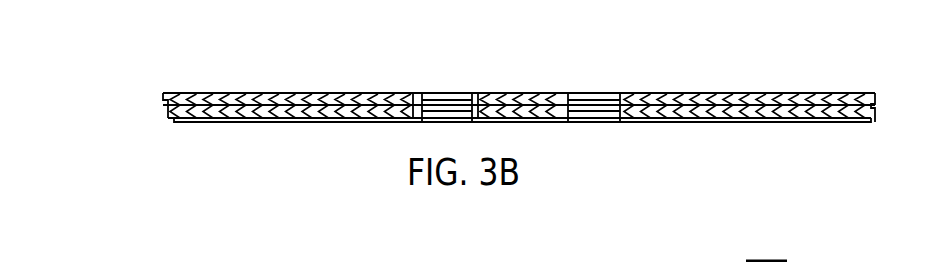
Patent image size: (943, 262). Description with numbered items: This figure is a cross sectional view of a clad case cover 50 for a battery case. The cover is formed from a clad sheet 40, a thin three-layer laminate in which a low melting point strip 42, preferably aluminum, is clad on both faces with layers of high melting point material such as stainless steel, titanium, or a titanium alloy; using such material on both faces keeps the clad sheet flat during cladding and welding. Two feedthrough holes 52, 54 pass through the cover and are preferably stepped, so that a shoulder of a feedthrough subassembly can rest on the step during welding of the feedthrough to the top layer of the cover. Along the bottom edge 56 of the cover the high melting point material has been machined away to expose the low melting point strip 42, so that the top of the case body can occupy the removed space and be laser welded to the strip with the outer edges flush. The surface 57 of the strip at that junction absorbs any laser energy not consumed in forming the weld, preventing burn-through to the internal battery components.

The clad case cover 50 is at (148, 66).
The clad sheet 40 is at (250, 93).
The feedthrough hole 52 is at (478, 94).
The feedthrough hole 54 is at (625, 94).
The low melting point strip 42 is at (165, 110).
The surface of the strip 57 is at (166, 116).
The bottom edge 56 is at (176, 121).